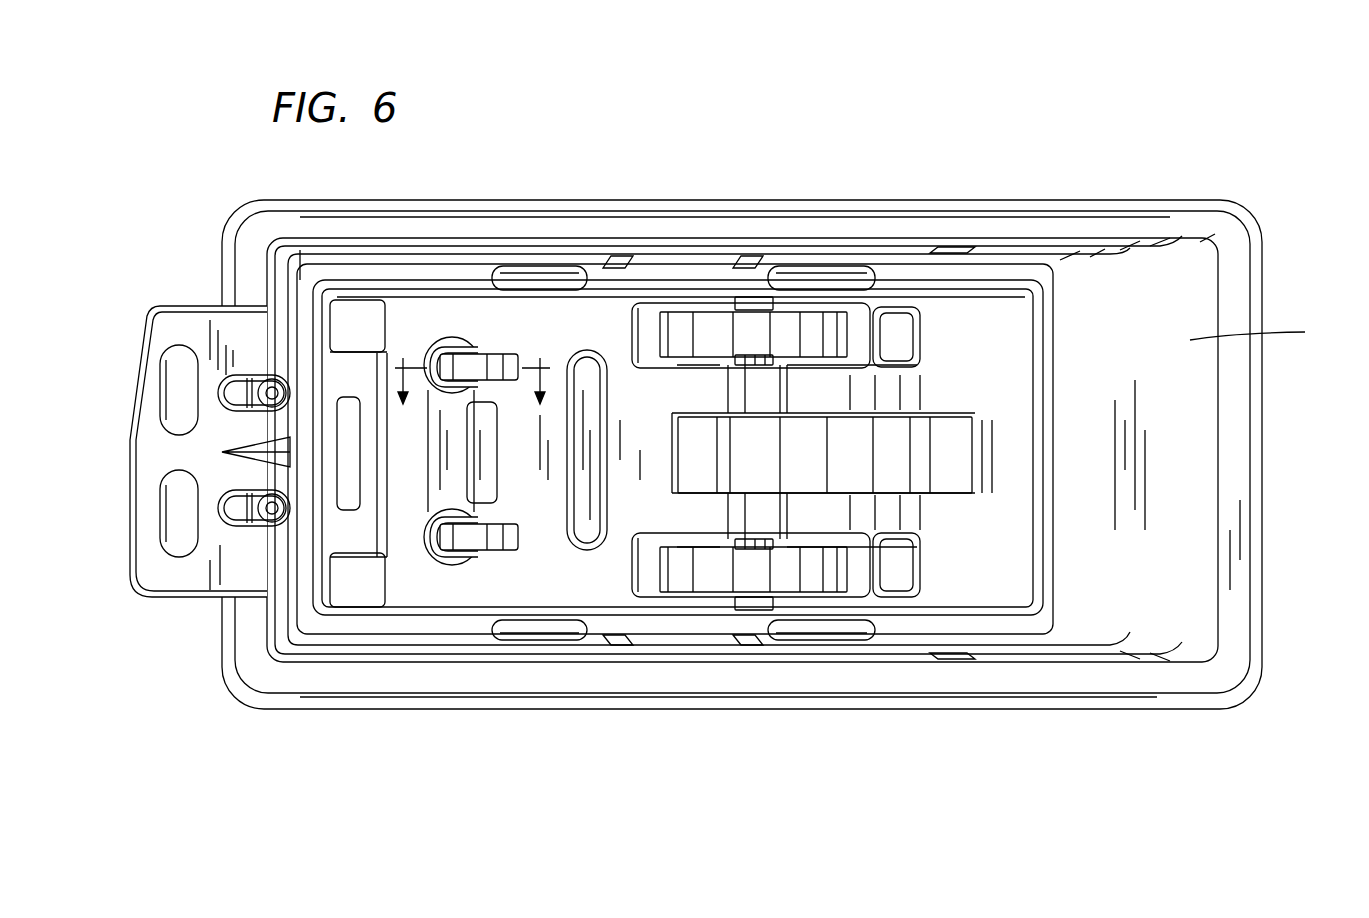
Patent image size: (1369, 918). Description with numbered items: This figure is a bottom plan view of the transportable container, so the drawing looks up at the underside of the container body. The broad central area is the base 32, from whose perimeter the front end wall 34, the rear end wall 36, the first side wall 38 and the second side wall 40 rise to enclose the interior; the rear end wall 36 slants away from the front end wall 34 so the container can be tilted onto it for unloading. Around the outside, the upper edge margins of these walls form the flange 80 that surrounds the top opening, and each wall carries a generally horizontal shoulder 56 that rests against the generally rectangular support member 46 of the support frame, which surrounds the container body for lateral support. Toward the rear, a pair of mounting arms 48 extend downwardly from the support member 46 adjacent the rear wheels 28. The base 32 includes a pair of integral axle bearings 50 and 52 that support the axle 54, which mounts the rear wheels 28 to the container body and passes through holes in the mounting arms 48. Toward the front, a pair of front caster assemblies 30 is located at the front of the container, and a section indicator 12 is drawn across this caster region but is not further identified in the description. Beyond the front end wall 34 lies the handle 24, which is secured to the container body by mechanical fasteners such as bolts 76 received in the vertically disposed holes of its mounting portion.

The handle 24 is at (148, 306).
The front caster assemblies 30 is at (433, 335).
The front end wall 34 is at (277, 282).
The flange 80 is at (507, 222).
The first side wall 38 is at (586, 250).
The base 32 is at (605, 330).
The axle 54 is at (757, 355).
The rear wheels 28 is at (787, 330).
The support member 46 is at (998, 287).
The shoulder 56 is at (1053, 277).
The rear end wall 36 is at (780, 454).
The section line 12 is at (474, 369).
The mounting arms 48 is at (735, 362).
The axle bearing 50 is at (830, 393).
The axle bearing 52 is at (830, 503).
The bolts 76 is at (268, 514).
The second side wall 40 is at (505, 665).